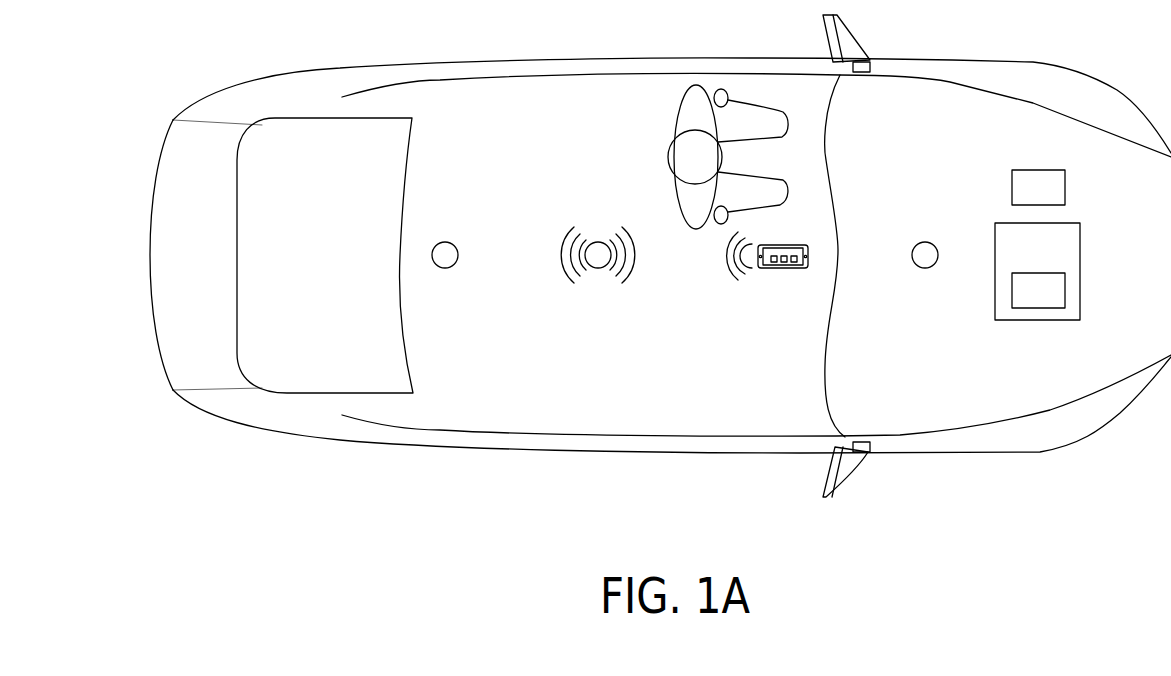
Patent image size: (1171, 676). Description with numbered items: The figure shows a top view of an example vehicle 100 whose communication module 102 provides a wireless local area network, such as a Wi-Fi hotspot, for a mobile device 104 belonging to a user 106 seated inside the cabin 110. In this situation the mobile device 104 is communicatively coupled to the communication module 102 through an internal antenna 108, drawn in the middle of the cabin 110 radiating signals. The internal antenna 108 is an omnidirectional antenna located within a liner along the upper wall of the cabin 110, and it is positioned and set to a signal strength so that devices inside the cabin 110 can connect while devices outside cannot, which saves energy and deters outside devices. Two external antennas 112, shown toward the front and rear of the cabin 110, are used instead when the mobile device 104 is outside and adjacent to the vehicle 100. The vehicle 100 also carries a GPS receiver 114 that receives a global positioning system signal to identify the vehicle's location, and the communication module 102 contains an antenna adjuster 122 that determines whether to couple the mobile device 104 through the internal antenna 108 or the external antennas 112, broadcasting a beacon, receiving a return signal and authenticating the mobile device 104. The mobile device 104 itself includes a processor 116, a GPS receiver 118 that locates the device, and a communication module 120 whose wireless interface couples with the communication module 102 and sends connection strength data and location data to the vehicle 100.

The vehicle 100 is at (237, 60).
The communication module 102 is at (1020, 256).
The mobile device 104 is at (811, 288).
The user 106 is at (658, 138).
The internal antenna 108 is at (595, 268).
The cabin 110 is at (677, 384).
The external antennas 112 is at (442, 268).
The GPS receiver 114 is at (1020, 200).
The processor 116 is at (774, 268).
The GPS receiver 118 is at (784, 268).
The communication module 120 is at (794, 268).
The antenna adjuster 122 is at (1020, 302).